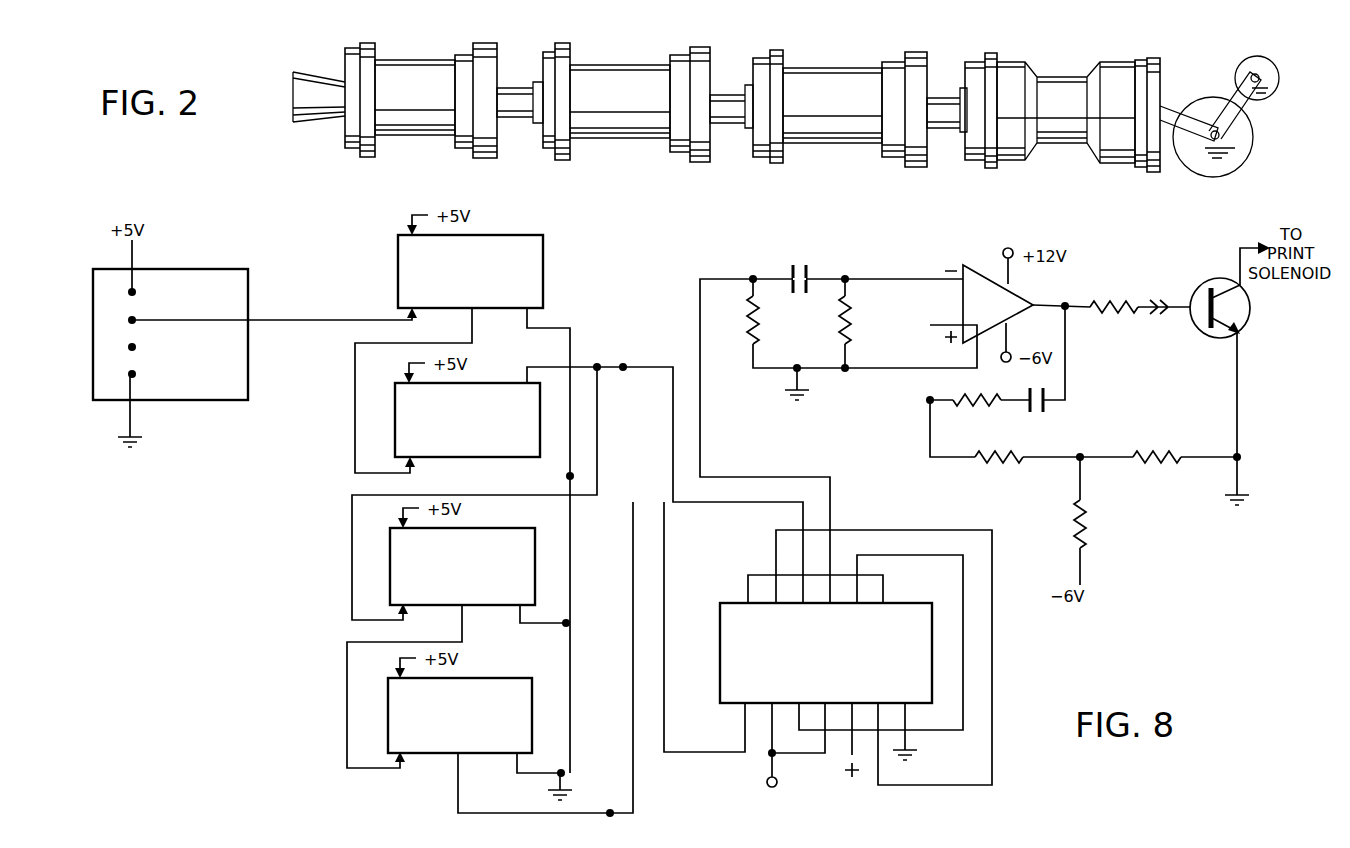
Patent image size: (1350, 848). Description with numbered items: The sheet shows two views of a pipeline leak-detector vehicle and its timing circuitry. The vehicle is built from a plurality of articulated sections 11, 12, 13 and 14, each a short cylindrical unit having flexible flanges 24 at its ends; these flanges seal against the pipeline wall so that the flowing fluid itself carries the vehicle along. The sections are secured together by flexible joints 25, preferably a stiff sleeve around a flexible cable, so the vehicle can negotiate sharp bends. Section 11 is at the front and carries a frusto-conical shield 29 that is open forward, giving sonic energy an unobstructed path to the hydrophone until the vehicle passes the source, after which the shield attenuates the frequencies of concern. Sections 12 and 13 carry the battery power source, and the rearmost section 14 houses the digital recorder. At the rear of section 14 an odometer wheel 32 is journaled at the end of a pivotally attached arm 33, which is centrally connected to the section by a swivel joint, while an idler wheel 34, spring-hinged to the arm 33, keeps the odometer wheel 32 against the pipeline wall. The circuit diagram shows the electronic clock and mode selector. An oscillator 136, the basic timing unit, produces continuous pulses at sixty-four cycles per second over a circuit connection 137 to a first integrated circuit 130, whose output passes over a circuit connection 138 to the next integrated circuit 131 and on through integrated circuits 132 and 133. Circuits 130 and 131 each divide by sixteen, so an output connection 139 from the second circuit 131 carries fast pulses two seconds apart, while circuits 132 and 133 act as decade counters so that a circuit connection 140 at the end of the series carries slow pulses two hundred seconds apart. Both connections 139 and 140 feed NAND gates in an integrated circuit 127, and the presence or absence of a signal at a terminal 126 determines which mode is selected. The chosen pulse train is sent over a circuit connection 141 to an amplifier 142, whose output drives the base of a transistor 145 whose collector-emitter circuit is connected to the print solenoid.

In FIG. 2, the front articulated section 11 is at (420, 104).
In FIG. 2, the articulated section 12 is at (628, 109).
In FIG. 2, the articulated section 13 is at (846, 115).
In FIG. 2, the rearmost articulated section 14 is at (1072, 119).
In FIG. 2, the flexible flanges 24 is at (372, 45).
In FIG. 2, the flexible joints 25 is at (518, 113).
In FIG. 2, the frusto-conical shield 29 is at (324, 122).
In FIG. 2, the odometer wheel 32 is at (1252, 143).
In FIG. 2, the pivotally attached arm 33 is at (1173, 107).
In FIG. 2, the idler wheel 34 is at (1270, 80).
In FIG. 8, the terminal 126 is at (766, 782).
In FIG. 8, the integrated circuit 127 is at (845, 661).
In FIG. 8, the first integrated circuit 130 is at (489, 287).
In FIG. 8, the second integrated circuit 131 is at (486, 435).
In FIG. 8, the integrated circuit 132 is at (480, 581).
In FIG. 8, the integrated circuit 133 is at (478, 731).
In FIG. 8, the oscillator 136 is at (209, 365).
In FIG. 8, the circuit connection 137 is at (312, 320).
In FIG. 8, the circuit connection 138 is at (472, 330).
In FIG. 8, the output connection 139 is at (643, 367).
In FIG. 8, the circuit connection 140 is at (550, 813).
In FIG. 8, the circuit connection 141 is at (700, 437).
In FIG. 8, the amplifier 142 is at (962, 300).
In FIG. 8, the transistor 145 is at (1205, 338).